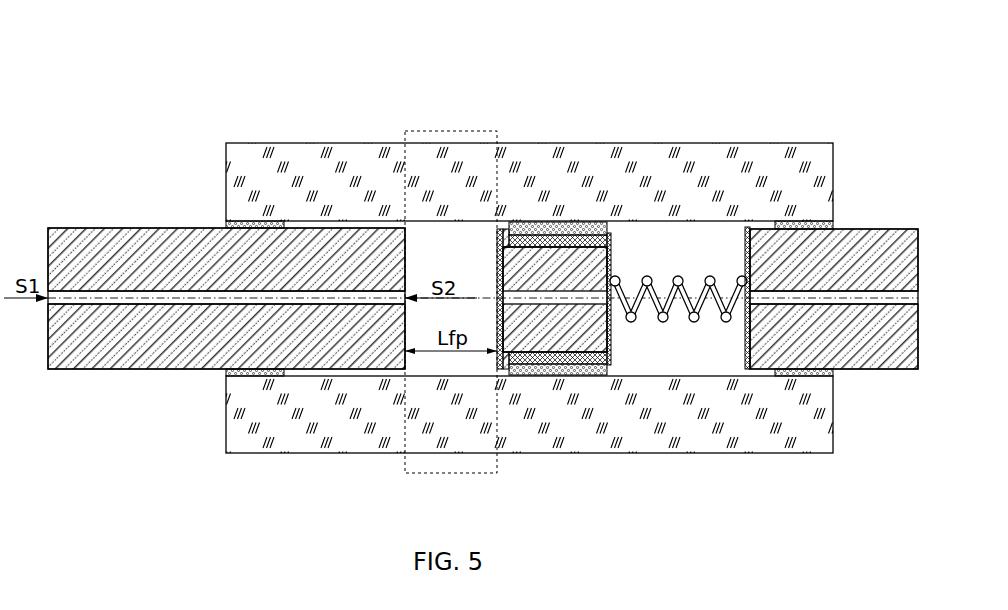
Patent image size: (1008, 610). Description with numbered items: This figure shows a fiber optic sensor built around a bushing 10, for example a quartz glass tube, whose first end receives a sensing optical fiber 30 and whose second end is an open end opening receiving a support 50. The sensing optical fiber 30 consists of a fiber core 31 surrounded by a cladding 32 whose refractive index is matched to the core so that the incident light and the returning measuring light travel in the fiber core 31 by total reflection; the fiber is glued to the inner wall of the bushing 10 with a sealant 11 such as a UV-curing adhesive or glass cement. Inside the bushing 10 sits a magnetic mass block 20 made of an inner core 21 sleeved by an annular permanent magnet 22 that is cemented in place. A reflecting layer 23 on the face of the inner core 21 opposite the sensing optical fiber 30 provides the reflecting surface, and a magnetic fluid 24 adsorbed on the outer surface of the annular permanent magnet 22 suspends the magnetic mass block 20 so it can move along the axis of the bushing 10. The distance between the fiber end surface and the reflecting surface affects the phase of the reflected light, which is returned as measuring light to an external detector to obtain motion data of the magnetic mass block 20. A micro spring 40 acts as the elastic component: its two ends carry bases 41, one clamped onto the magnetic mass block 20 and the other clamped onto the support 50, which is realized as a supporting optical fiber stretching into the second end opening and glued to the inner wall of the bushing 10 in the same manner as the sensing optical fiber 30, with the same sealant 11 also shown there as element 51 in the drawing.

The bushing 10 is at (338, 180).
The sealant 11 is at (256, 222).
The magnetic mass block 20 is at (550, 207).
The inner core 21 is at (612, 250).
The annular permanent magnet 22 is at (566, 242).
The reflecting layer 23 is at (497, 239).
The magnetic fluid 24 is at (522, 228).
The sensing optical fiber 30 is at (224, 204).
The fiber core 31 is at (152, 297).
The cladding 32 is at (115, 262).
The micro spring 40 is at (712, 280).
The base 41 is at (752, 228).
The support 50 is at (850, 262).
The seal ring 51 is at (818, 224).